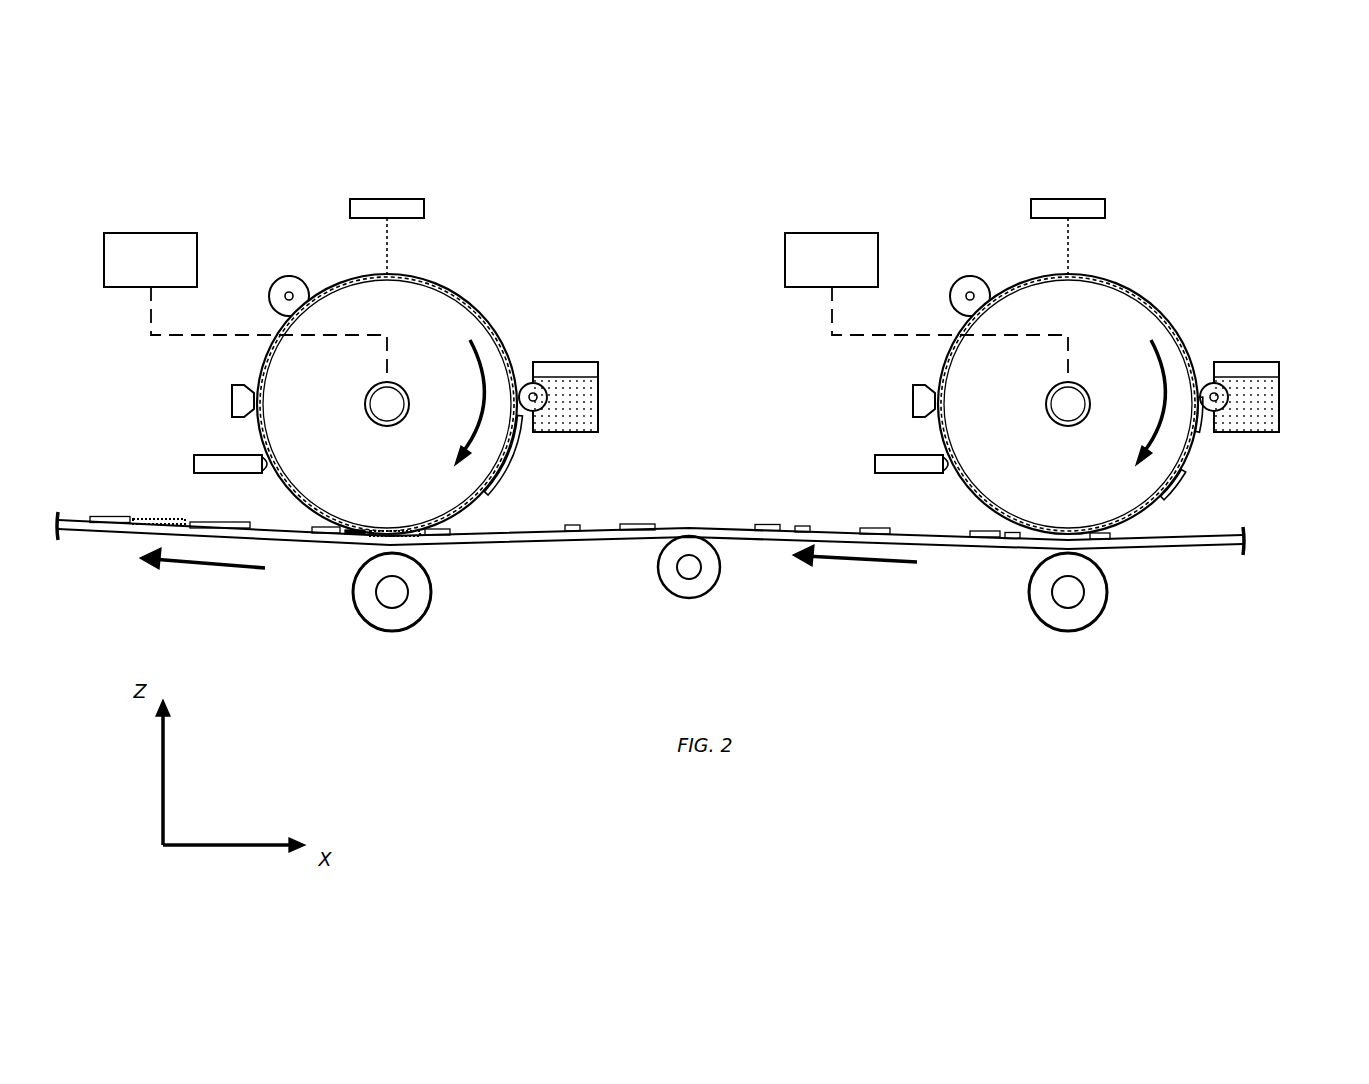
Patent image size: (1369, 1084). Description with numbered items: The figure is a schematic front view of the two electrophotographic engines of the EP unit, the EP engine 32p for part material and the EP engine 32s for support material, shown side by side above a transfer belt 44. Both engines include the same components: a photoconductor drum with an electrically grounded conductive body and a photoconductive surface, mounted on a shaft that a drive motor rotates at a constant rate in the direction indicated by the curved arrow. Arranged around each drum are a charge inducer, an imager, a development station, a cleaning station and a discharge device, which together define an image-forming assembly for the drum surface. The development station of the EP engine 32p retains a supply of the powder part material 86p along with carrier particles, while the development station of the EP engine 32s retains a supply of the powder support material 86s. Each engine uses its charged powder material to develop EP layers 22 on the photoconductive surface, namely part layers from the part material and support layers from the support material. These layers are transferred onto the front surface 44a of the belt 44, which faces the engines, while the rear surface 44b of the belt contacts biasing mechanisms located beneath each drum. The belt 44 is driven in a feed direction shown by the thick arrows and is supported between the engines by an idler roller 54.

The EP layers 22 is at (142, 504).
The EP engine for part material 32p is at (500, 180).
The EP engine for support material 32s is at (1217, 162).
The transfer medium (belt) 44 is at (1210, 560).
The front surface 44a is at (722, 528).
The rear surface 44b is at (722, 528).
The idler rollers 54 is at (690, 598).
The part material 86p is at (585, 393).
The support material 86s is at (1286, 409).